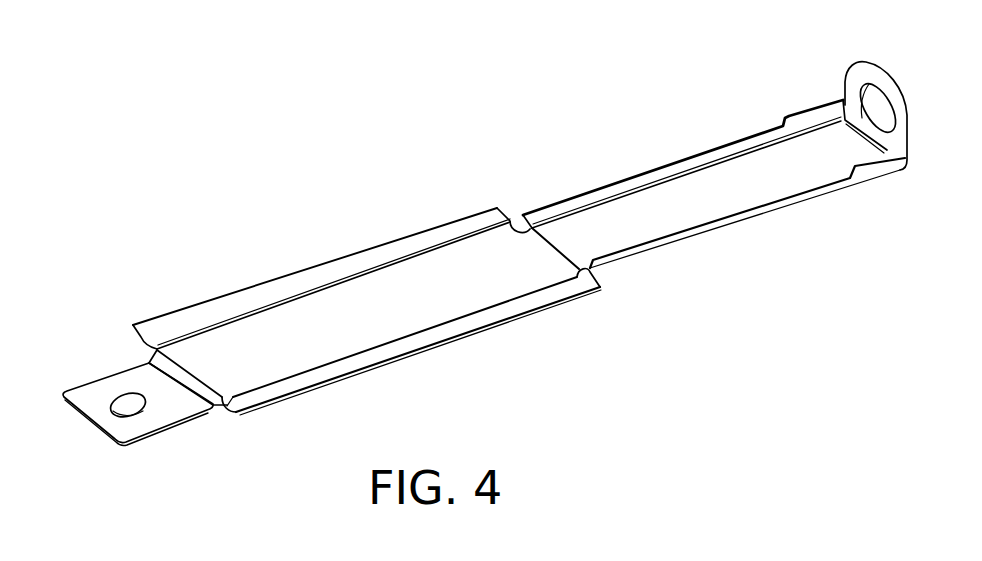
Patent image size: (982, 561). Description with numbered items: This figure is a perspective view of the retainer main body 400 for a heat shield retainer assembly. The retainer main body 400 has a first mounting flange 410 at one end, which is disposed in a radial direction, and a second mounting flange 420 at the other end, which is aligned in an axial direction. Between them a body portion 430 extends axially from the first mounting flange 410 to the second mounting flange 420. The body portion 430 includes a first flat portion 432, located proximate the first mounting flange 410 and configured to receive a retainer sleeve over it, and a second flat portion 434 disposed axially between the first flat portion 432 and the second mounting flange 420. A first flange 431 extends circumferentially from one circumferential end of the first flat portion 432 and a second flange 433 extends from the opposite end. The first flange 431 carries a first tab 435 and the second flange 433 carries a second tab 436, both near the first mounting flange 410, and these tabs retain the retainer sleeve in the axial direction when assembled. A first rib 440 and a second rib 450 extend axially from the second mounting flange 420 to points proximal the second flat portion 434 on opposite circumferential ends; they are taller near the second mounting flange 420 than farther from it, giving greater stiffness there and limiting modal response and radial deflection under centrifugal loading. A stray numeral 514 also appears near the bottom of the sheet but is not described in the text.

The retainer main body 400 is at (212, 199).
The first mounting flange 410 is at (149, 405).
The second mounting flange 420 is at (858, 113).
The body portion 430 is at (475, 273).
The first flange 431 is at (292, 394).
The first flat portion 432 is at (327, 343).
The second flange 433 is at (200, 307).
The second flat portion 434 is at (654, 228).
The first tab 435 is at (227, 406).
The second tab 436 is at (136, 338).
The first rib 440 is at (775, 207).
The second rib 450 is at (710, 163).
The component 514 is at (781, 558).